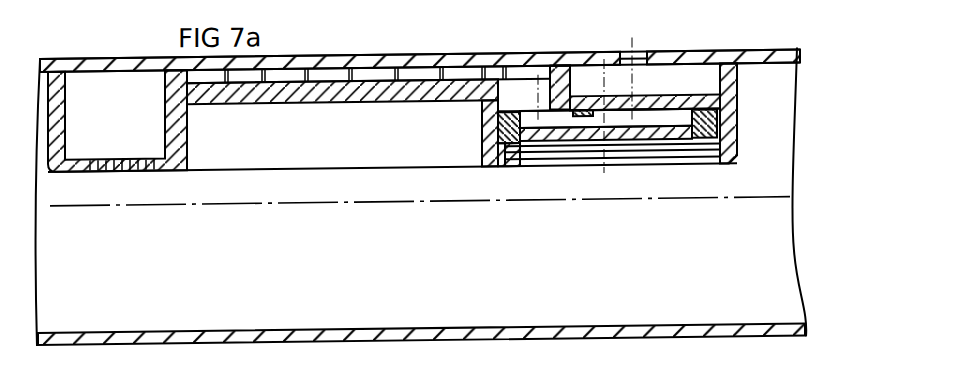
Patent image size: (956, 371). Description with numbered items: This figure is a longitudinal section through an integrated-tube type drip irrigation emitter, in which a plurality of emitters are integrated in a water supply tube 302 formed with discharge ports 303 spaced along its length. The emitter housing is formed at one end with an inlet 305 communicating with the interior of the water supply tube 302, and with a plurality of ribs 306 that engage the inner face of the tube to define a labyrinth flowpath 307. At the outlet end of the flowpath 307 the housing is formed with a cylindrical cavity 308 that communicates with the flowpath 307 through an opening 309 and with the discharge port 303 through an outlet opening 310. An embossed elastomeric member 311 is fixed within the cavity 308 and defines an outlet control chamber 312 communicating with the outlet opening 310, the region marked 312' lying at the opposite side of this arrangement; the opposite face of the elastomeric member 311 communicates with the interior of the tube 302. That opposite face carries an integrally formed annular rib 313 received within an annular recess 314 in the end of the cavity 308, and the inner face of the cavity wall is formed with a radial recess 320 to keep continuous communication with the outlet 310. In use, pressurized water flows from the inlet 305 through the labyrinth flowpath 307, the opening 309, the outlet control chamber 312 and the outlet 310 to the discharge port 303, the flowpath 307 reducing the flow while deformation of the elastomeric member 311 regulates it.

The water supply tube 302 is at (406, 68).
The discharge port 303 is at (640, 68).
The inlet 305 is at (117, 169).
The ribs 306 is at (229, 88).
The labyrinth flowpath 307 is at (274, 90).
The cavity 308 is at (497, 129).
The opening 309 is at (550, 103).
The outlet opening 310 is at (612, 107).
The embossed elastomeric member 311 is at (580, 150).
The outlet control chamber 312 is at (645, 95).
The support wall 312' is at (467, 133).
The annular rib 313 is at (510, 169).
The annular recess 314 is at (500, 172).
The radial recess 320 is at (562, 68).